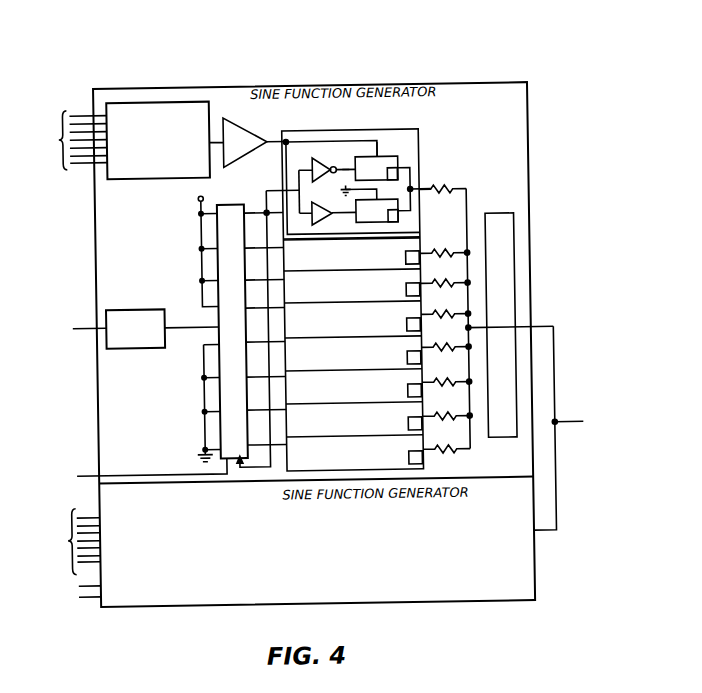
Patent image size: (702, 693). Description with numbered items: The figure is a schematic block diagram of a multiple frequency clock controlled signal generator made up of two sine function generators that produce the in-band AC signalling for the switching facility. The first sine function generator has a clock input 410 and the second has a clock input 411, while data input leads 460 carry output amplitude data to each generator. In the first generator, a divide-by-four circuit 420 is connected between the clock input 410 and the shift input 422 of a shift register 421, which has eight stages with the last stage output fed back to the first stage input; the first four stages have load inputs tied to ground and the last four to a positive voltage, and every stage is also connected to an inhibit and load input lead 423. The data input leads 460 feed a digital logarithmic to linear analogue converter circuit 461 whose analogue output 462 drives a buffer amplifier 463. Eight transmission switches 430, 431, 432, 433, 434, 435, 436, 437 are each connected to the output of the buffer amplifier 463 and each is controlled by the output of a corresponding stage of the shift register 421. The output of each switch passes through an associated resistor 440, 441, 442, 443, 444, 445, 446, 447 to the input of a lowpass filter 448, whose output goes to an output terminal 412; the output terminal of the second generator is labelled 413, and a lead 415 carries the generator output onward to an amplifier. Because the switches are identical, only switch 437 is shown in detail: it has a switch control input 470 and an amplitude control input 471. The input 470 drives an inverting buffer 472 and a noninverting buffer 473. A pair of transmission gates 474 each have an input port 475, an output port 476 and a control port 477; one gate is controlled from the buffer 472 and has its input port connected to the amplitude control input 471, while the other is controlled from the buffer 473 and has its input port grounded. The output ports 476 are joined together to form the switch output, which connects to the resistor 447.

The clock input 410 is at (84, 325).
The clock input 411 is at (75, 583).
The output terminal 412 is at (545, 329).
The output terminal 413 is at (540, 534).
The lead 415 is at (567, 424).
The divide by 4 circuit 420 is at (151, 307).
The shift register 421 is at (240, 321).
The shift input 422 is at (201, 327).
The inhibit and load input lead 423 is at (91, 472).
The transmission switch 430 is at (361, 455).
The transmission switch 431 is at (389, 421).
The transmission switch 432 is at (389, 388).
The transmission switch 433 is at (388, 355).
The transmission switch 434 is at (388, 322).
The transmission switch 435 is at (387, 287).
The transmission switch 436 is at (358, 255).
The transmission switch 437 is at (421, 131).
The resistor 440 is at (463, 442).
The resistor 441 is at (459, 409).
The resistor 442 is at (460, 375).
The resistor 443 is at (459, 340).
The resistor 444 is at (458, 307).
The resistor 445 is at (455, 277).
The resistor 446 is at (453, 241).
The resistor 447 is at (446, 187).
The lowpass filter 448 is at (501, 325).
The data input leads 460 is at (66, 342).
The digital logarithmic to linear analogue converter circuit 461 is at (151, 177).
The analogue output 462 is at (226, 117).
The buffer amplifier 463 is at (258, 131).
The switch control input 470 is at (269, 190).
The amplitude control input 471 is at (296, 131).
The inverting buffer 472 is at (318, 163).
The noninverting buffer 473 is at (333, 200).
The transmission gates 474 is at (377, 189).
The input port 475 is at (380, 150).
The output port 476 is at (421, 168).
The control port 477 is at (346, 168).